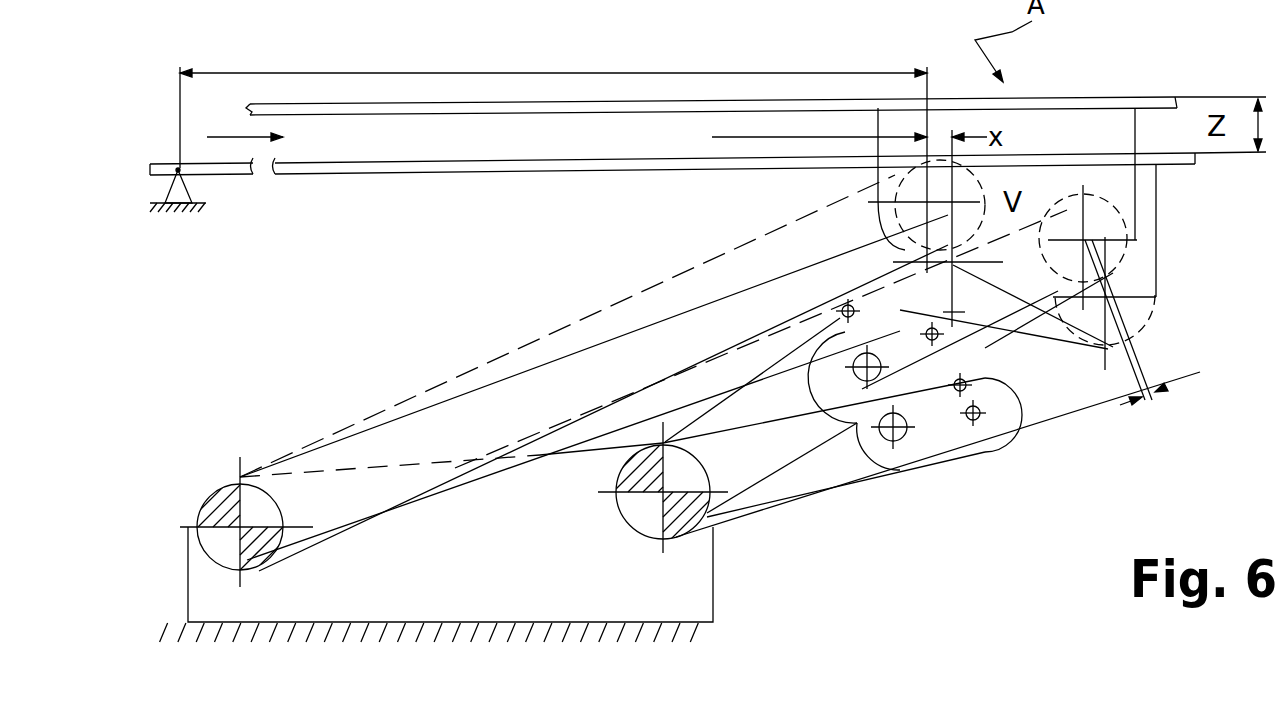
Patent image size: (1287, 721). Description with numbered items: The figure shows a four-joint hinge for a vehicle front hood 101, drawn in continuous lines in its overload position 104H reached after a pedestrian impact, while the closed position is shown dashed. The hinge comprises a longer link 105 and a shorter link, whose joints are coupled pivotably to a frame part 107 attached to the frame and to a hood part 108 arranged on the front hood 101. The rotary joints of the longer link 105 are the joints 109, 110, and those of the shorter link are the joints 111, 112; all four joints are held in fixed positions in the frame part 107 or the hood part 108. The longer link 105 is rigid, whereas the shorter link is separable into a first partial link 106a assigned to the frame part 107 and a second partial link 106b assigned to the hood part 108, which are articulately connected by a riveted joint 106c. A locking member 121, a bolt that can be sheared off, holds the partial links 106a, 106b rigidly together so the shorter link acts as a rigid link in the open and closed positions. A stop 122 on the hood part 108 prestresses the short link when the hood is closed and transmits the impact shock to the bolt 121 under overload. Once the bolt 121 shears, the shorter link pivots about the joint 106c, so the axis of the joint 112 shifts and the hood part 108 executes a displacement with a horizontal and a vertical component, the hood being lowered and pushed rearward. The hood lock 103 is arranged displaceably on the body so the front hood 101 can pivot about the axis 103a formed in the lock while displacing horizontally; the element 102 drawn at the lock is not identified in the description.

The front hood 101 is at (525, 103).
The shaft 102 is at (207, 168).
The hood lock 103 is at (197, 203).
The axis in the hood lock 103a is at (178, 172).
The longer link 105 is at (452, 495).
The four-joint hinge in overload position H 104H is at (1028, 415).
The first partial link 106a is at (830, 495).
The second partial link 106b is at (1115, 343).
The joint 106c is at (898, 432).
The frame part 107 is at (710, 578).
The hood part 108 is at (1158, 250).
The rotary joint of the longer link 109 is at (222, 546).
The rotary joint of the longer link 110 is at (963, 190).
The rotary joint of the shorter link 111 is at (640, 513).
The rotary joint of the shorter link 112 is at (1102, 213).
The locking member 121 is at (930, 330).
The stop 122 is at (843, 311).